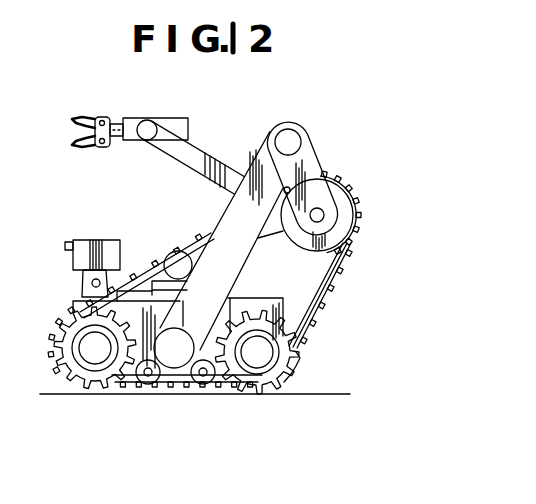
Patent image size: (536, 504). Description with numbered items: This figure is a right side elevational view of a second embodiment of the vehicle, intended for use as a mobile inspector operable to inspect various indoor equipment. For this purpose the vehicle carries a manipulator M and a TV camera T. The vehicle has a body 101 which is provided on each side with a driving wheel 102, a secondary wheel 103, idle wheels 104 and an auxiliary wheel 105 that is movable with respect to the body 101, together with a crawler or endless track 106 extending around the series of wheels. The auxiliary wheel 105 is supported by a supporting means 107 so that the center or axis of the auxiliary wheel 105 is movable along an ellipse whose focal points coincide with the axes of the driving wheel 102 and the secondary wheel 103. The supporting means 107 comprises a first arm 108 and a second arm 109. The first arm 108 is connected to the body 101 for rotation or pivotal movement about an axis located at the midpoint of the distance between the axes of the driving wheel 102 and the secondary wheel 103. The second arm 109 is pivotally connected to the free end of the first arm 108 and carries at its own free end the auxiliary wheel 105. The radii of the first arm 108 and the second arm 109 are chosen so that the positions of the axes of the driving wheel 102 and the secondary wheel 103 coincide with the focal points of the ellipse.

The body 101 is at (259, 298).
The driving wheel 102 is at (94, 386).
The secondary wheel 103 is at (290, 377).
The idle wheels 104 is at (156, 388).
The auxiliary wheel 105 is at (352, 200).
The crawler or endless track 106 is at (343, 262).
The supporting means 107 is at (313, 151).
The first arm 108 is at (232, 235).
The second arm 109 is at (320, 160).
The manipulator M is at (207, 152).
The TV camera T is at (100, 240).